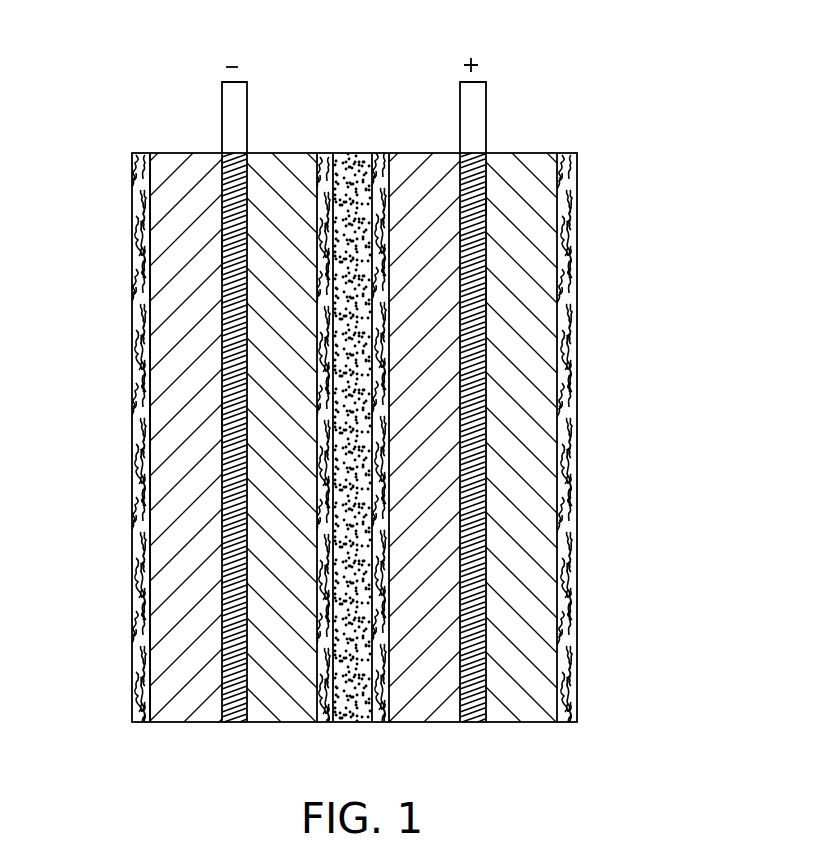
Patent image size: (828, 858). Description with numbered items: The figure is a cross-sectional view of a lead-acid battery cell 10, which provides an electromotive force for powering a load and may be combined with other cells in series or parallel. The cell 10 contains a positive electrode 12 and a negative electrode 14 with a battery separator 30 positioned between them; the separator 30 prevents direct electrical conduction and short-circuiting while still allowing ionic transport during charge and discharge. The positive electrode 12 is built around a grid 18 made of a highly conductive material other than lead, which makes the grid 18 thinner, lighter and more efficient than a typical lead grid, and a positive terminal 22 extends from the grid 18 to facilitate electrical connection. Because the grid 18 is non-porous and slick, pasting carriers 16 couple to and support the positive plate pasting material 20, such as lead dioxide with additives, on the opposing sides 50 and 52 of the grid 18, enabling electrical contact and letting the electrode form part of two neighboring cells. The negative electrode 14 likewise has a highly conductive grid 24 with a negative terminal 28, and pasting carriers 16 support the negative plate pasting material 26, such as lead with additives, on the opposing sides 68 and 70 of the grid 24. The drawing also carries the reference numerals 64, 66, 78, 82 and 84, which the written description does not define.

The lead-acid battery cell 10 is at (664, 156).
The positive electrode 12 is at (576, 63).
The negative electrode 14 is at (317, 63).
The pasting carriers 16 is at (142, 698).
The grid 18 is at (487, 288).
The positive plate pasting material 20 is at (497, 702).
The positive terminal 22 is at (486, 118).
The grid 24 is at (222, 413).
The negative plate pasting material 26 is at (253, 703).
The negative terminal 28 is at (222, 120).
The battery separator 30 is at (345, 722).
The side of the grid 50 is at (461, 185).
The side of the grid 52 is at (486, 188).
The outer cathode active layer lower portion 64 is at (520, 722).
The outer cathode active layer upper portion 66 is at (517, 153).
The side of the grid 68 is at (222, 254).
The side of the grid 70 is at (246, 185).
The anode layer boundary 78 is at (150, 683).
The outer anode active layer upper portion 82 is at (185, 153).
The outer anode active layer lower portion 84 is at (173, 722).